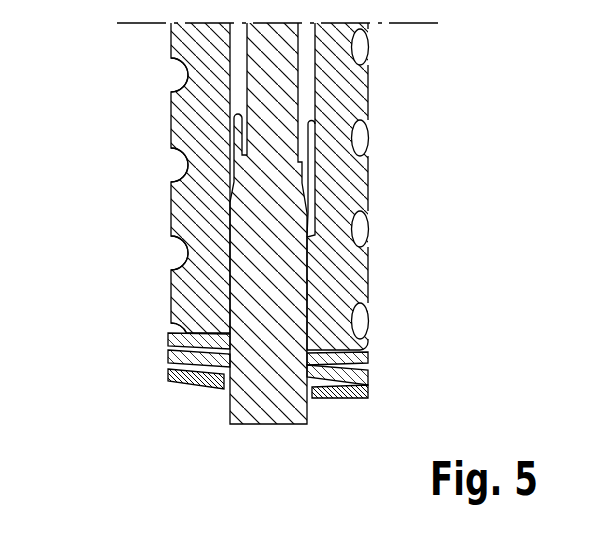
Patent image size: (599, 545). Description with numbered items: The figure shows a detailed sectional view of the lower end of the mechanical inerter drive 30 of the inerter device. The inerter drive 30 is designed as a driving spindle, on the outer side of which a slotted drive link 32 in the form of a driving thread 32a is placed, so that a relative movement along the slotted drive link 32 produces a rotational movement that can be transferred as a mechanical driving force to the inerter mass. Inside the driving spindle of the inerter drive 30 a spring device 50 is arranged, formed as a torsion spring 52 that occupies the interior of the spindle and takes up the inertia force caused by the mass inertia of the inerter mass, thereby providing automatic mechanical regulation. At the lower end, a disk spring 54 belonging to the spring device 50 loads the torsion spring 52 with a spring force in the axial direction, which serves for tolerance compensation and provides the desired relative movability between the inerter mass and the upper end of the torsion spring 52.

The mechanical inerter drive 30 is at (343, 172).
The slotted drive link 32 is at (160, 76).
The driving thread 32a is at (360, 139).
The spring device 50 is at (216, 261).
The torsion spring 52 is at (243, 298).
The disk spring 54 is at (182, 388).